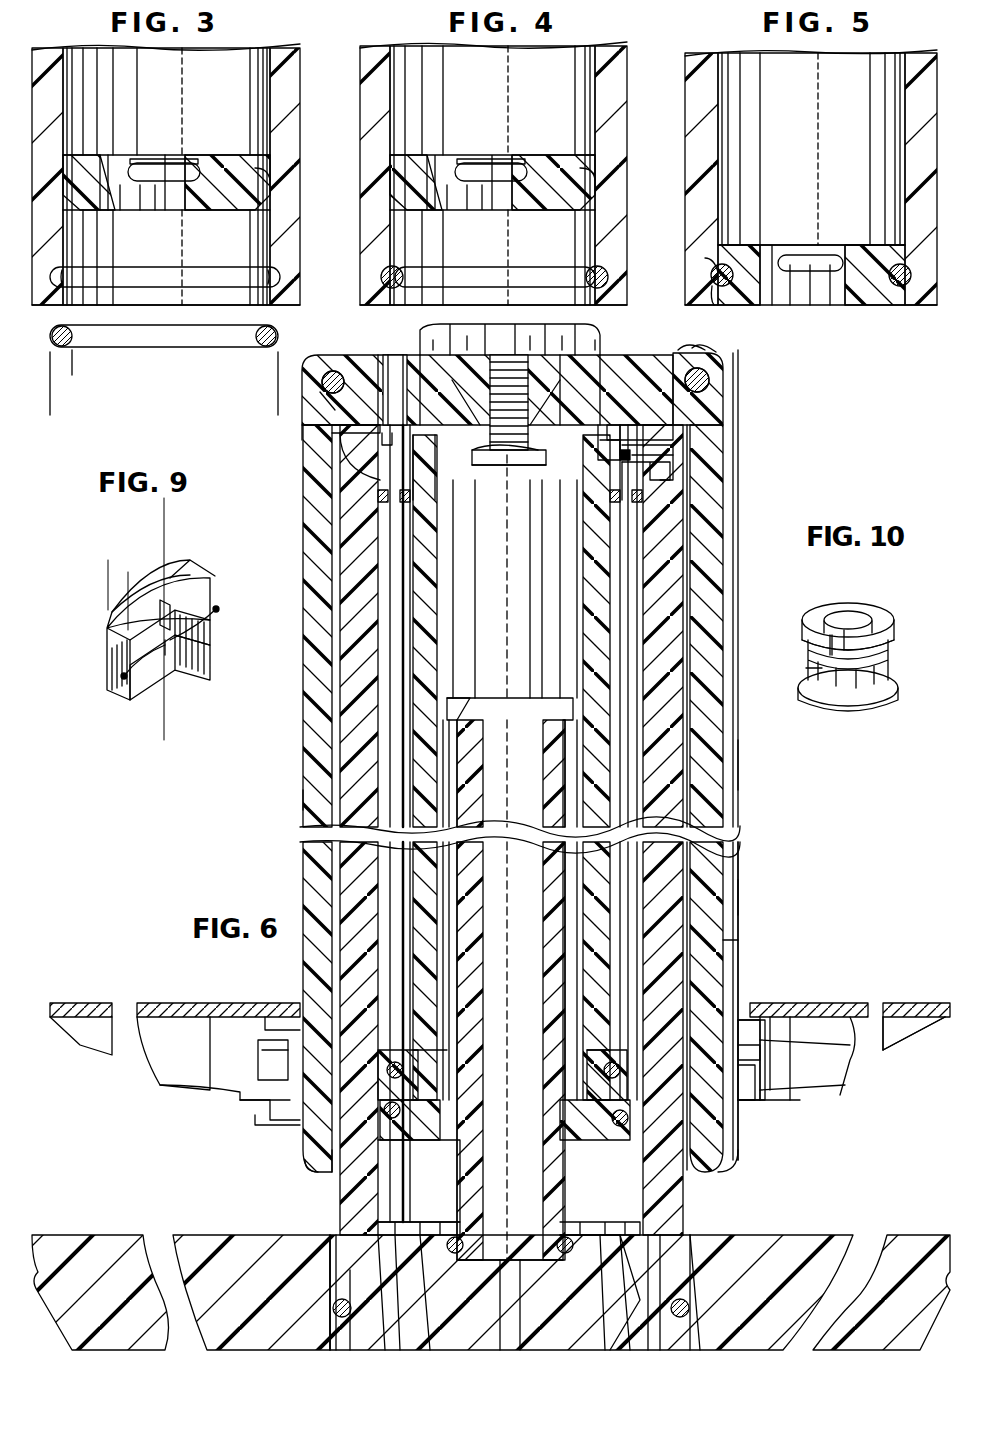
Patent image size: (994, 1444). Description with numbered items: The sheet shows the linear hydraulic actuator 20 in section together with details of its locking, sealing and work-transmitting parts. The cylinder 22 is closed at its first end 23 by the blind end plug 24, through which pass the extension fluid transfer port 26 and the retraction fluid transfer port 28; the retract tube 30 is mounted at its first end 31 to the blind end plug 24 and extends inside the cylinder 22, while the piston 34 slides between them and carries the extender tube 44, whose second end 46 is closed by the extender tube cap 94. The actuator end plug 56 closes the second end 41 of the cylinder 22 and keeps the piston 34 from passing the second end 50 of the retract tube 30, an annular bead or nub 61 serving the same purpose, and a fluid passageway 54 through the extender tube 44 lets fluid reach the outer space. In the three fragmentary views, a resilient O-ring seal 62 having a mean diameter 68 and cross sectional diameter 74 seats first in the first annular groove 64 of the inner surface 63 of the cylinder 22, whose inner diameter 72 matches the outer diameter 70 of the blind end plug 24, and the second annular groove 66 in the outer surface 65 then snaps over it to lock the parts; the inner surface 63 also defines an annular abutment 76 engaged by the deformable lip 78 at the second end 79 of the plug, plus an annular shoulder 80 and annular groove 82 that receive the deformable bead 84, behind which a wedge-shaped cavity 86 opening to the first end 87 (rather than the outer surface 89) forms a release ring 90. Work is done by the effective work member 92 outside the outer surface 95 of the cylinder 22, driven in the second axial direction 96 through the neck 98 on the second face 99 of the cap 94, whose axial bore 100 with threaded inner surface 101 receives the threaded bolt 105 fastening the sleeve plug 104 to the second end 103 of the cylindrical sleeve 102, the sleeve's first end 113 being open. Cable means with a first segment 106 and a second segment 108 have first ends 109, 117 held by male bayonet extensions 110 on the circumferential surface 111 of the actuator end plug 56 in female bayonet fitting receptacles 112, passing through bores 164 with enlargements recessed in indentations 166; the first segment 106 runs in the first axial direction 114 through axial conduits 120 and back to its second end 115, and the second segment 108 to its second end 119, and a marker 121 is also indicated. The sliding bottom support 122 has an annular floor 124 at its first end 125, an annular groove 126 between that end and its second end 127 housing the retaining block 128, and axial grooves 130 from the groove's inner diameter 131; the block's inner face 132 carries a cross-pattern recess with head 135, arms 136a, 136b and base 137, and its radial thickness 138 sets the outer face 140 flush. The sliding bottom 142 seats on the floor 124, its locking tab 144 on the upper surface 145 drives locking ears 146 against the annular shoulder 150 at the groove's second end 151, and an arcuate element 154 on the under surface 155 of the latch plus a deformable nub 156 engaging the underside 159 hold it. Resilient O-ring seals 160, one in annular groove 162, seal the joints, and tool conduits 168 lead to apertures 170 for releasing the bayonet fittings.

In FIG. 3, the linear hydraulic actuator 20 is at (305, 55).
In FIG. 4, the linear hydraulic actuator 20 is at (635, 55).
In FIG. 5, the linear hydraulic actuator 20 is at (916, 52).
In FIG. 6, the linear hydraulic actuator 20 is at (290, 797).
In FIG. 6, the cylinder 22 is at (320, 740).
In FIG. 3, the first end of the cylinder 23 is at (280, 305).
In FIG. 4, the first end of the cylinder 23 is at (384, 305).
In FIG. 5, the first end of the cylinder 23 is at (918, 308).
In FIG. 3, the blind end plug 24 is at (205, 160).
In FIG. 4, the blind end plug 24 is at (530, 160).
In FIG. 5, the blind end plug 24 is at (825, 250).
In FIG. 6, the blind end plug 24 is at (492, 1340).
In FIG. 6, the extension fluid transfer port 26 is at (450, 1340).
In FIG. 6, the retraction fluid transfer port 28 is at (524, 1340).
In FIG. 6, the retract tube 30 is at (470, 925).
In FIG. 6, the first end of the retract tube 31 is at (509, 1262).
In FIG. 6, the piston 34 is at (340, 1180).
In FIG. 6, the second end of the cylinder 41 is at (340, 427).
In FIG. 6, the extender tube 44 is at (425, 946).
In FIG. 6, the second end of the extender tube 46 is at (598, 420).
In FIG. 6, the second end of the retract tube 50 is at (543, 698).
In FIG. 6, the fluid passageway 54 is at (587, 1068).
In FIG. 6, the actuator end plug 56 is at (430, 468).
In FIG. 6, the annular bead or nub 61 is at (455, 700).
In FIG. 3, the resilient O-ring seal 62 is at (150, 340).
In FIG. 4, the resilient O-ring seal 62 is at (385, 280).
In FIG. 5, the resilient O-ring seal 62 is at (710, 283).
In FIG. 6, the resilient O-ring seal 62 is at (320, 383).
In FIG. 3, the inner surface of the cylinder 63 is at (272, 234).
In FIG. 4, the inner surface of the cylinder 63 is at (400, 56).
In FIG. 5, the inner surface of the cylinder 63 is at (730, 58).
In FIG. 6, the inner surface of the cylinder 63 is at (650, 1350).
In FIG. 3, the first annular groove 64 is at (172, 280).
In FIG. 4, the first annular groove 64 is at (392, 275).
In FIG. 5, the first annular groove 64 is at (712, 272).
In FIG. 6, the first annular groove 64 is at (710, 378).
In FIG. 3, the outer surface of the blind end plug 65 is at (255, 206).
In FIG. 4, the outer surface of the blind end plug 65 is at (580, 207).
In FIG. 5, the outer surface of the blind end plug 65 is at (893, 300).
In FIG. 6, the outer surface of the blind end plug 65 is at (712, 352).
In FIG. 3, the second annular groove 66 is at (268, 180).
In FIG. 4, the second annular groove 66 is at (594, 180).
In FIG. 5, the second annular groove 66 is at (705, 262).
In FIG. 6, the second annular groove 66 is at (325, 405).
In FIG. 3, the mean diameter of the O-ring seal 68 is at (50, 400).
In FIG. 3, the outer diameter of the blind end plug 70 is at (290, 160).
In FIG. 3, the inner diameter of the cylinder 72 is at (65, 90).
In FIG. 3, the cross sectional diameter of the O-ring 74 is at (72, 365).
In FIG. 6, the annular abutment 76 is at (380, 1228).
In FIG. 6, the annular deformable lip 78 is at (660, 1225).
In FIG. 6, the second end of the blind end plug 79 is at (410, 1200).
In FIG. 6, the annular shoulder 80 is at (660, 1300).
In FIG. 6, the annular groove 82 is at (660, 1300).
In FIG. 6, the annular deformable bead 84 is at (650, 1280).
In FIG. 6, the cavity 86 is at (595, 1340).
In FIG. 6, the first end of the male component 87 is at (392, 1330).
In FIG. 6, the outer surface of the male component 89 is at (358, 1340).
In FIG. 6, the release ring 90 is at (630, 1340).
In FIG. 6, the effective work member 92 is at (178, 990).
In FIG. 6, the extender tube cap 94 is at (555, 400).
In FIG. 6, the outer surface of the cylinder 95 is at (700, 596).
In FIG. 6, the second axial direction 96 is at (768, 740).
In FIG. 6, the neck 98 is at (560, 390).
In FIG. 6, the second face of the extender tube cap 99 is at (490, 380).
In FIG. 6, the axial bore 100 is at (538, 452).
In FIG. 6, the inner surface of the axial bore 101 is at (487, 468).
In FIG. 6, the cylindrical sleeve 102 is at (345, 870).
In FIG. 6, the second end of the sleeve 103 is at (312, 357).
In FIG. 6, the sleeve plug 104 is at (720, 392).
In FIG. 6, the threaded bolt 105 is at (590, 333).
In FIG. 6, the first segment of the cable means 106 is at (742, 848).
In FIG. 6, the second segment of the cable means 108 is at (740, 1160).
In FIG. 6, the first end of the first segment 109 is at (632, 455).
In FIG. 6, the male bayonet extensions 110 is at (650, 475).
In FIG. 6, the circumferential surface of the actuator end plug 111 is at (640, 490).
In FIG. 6, the female bayonet fitting receptacles 112 is at (675, 432).
In FIG. 6, the first end of the sleeve 113 is at (306, 1165).
In FIG. 6, the first axial direction 114 is at (808, 840).
In FIG. 9, the second end of the first segment 115 is at (120, 677).
In FIG. 6, the second end of the first segment 115 is at (762, 1080).
In FIG. 6, the first end of the second segment 117 is at (675, 468).
In FIG. 6, the second end of the second segment 119 is at (770, 1108).
In FIG. 6, the axial conduits 120 is at (688, 350).
In FIG. 6, the shell section 121 is at (740, 943).
In FIG. 10, the sliding bottom support 122 is at (908, 648).
In FIG. 6, the sliding bottom support 122 is at (770, 1110).
In FIG. 10, the annular floor 124 is at (898, 690).
In FIG. 6, the annular floor 124 is at (268, 1100).
In FIG. 10, the first end of the sliding bottom support 125 is at (860, 700).
In FIG. 6, the first end of the sliding bottom support 125 is at (260, 1125).
In FIG. 10, the annular groove 126 is at (826, 690).
In FIG. 6, the annular groove 126 is at (200, 1095).
In FIG. 10, the second end of the sliding bottom support 127 is at (868, 604).
In FIG. 6, the second end of the sliding bottom support 127 is at (290, 1002).
In FIG. 9, the retaining block 128 is at (213, 590).
In FIG. 6, the retaining block 128 is at (762, 1105).
In FIG. 10, the axial grooves 130 is at (818, 640).
In FIG. 6, the axial grooves 130 is at (840, 1060).
In FIG. 10, the inner diameter of the annular groove 131 is at (806, 668).
In FIG. 6, the inner diameter of the annular groove 131 is at (258, 1080).
In FIG. 9, the inner face of the retaining block 132 is at (202, 655).
In FIG. 9, the head of the cross-pattern 135 is at (175, 600).
In FIG. 9, the arm of the cross-pattern 136a is at (145, 690).
In FIG. 9, the other arm of the cross-pattern 136b is at (210, 635).
In FIG. 9, the base of the cross-pattern recess 137 is at (170, 655).
In FIG. 9, the radial thickness of the retaining block 138 is at (120, 572).
In FIG. 9, the outer face of the retaining block 140 is at (148, 592).
In FIG. 6, the sliding bottom 142 is at (898, 1040).
In FIG. 6, the locking tab 144 is at (790, 1022).
In FIG. 6, the upper surface of the sliding bottom 145 is at (930, 1003).
In FIG. 6, the locking ears 146 is at (790, 1098).
In FIG. 6, the annular shoulder 150 is at (260, 1052).
In FIG. 6, the second end of the annular groove 151 is at (262, 1050).
In FIG. 6, the arcuate element 154 is at (800, 1003).
In FIG. 6, the under surface of the locking latch 155 is at (795, 1020).
In FIG. 6, the deformable nub 156 is at (862, 1003).
In FIG. 6, the underside of the sliding bottom 159 is at (925, 1020).
In FIG. 6, the resilient O-ring seals 160 is at (625, 495).
In FIG. 6, the annular groove 162 is at (620, 495).
In FIG. 6, the bores 164 is at (670, 445).
In FIG. 6, the indentations 166 is at (618, 490).
In FIG. 6, the tool conduits 168 is at (386, 440).
In FIG. 6, the apertures 170 is at (378, 450).